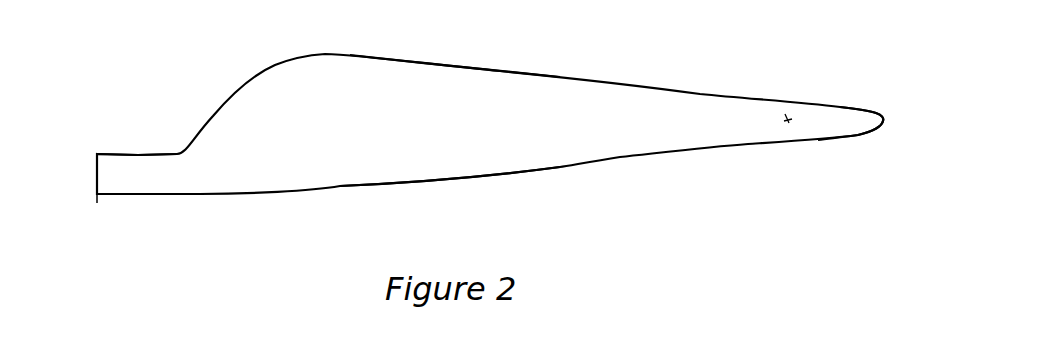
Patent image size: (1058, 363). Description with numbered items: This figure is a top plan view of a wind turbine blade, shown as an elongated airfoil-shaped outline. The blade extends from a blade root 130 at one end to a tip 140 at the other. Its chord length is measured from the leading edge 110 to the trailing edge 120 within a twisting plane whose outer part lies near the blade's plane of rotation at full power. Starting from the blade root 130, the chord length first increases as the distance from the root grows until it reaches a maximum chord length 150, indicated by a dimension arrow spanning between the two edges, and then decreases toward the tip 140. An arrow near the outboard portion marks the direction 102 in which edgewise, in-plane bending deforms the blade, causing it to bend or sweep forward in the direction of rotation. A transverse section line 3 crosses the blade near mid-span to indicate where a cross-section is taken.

The direction of deformation 102 is at (784, 91).
The trailing edge 120 is at (639, 71).
The leading edge 110 is at (627, 151).
The blade root 130 is at (112, 181).
The tip 140 is at (837, 96).
The maximum chord length 150 is at (305, 50).
The section line 3- 3 is at (547, 212).